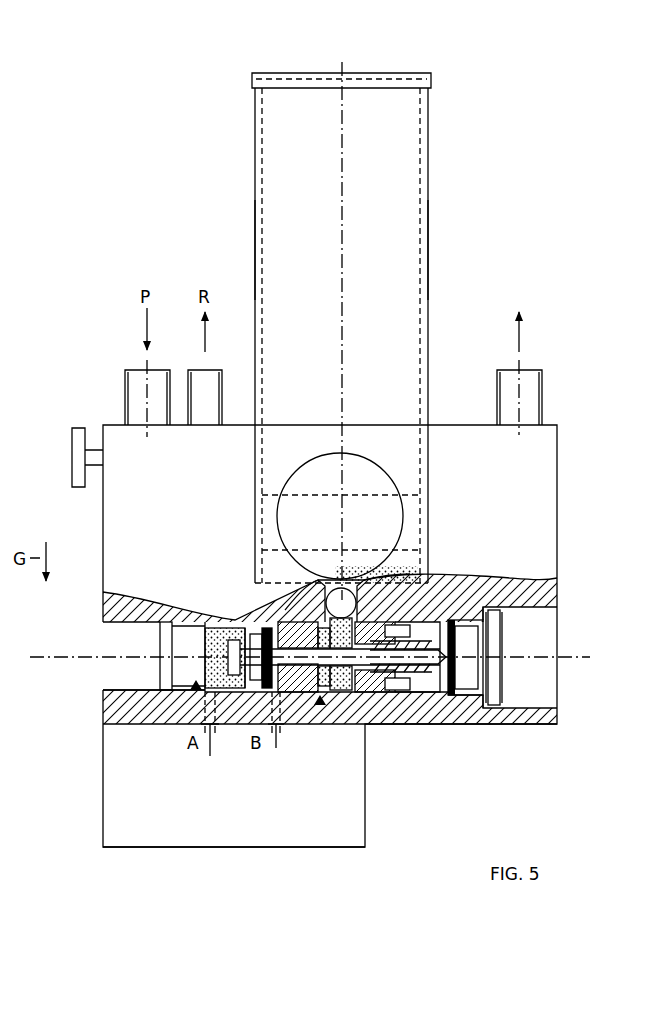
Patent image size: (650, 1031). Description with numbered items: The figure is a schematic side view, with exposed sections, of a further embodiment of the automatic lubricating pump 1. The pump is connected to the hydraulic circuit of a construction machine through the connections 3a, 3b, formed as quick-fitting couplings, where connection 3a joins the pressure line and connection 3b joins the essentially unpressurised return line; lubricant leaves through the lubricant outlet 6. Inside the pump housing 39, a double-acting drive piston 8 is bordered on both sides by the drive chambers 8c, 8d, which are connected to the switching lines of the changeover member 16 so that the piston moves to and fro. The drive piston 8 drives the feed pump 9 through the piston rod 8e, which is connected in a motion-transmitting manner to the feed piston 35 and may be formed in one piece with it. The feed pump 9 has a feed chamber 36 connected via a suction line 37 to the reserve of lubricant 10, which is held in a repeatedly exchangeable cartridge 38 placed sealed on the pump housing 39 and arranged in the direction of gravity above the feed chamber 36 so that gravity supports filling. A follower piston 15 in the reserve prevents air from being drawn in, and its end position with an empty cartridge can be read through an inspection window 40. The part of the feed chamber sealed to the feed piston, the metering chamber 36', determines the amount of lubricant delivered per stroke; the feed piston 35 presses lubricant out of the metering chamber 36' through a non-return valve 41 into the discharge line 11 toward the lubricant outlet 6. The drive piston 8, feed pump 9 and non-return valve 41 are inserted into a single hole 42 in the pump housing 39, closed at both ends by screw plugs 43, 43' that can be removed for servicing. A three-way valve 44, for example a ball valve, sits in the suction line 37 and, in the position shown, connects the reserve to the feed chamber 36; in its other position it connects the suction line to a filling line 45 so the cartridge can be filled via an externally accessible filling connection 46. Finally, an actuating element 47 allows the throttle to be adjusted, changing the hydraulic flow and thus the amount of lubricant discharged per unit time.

The automatic lubricating pump 1 is at (94, 78).
The connection 3a is at (128, 360).
The connection 3b is at (196, 358).
The lubricant outlet 6 is at (548, 357).
The drive piston 8 is at (240, 622).
The drive chamber 8c is at (205, 614).
The drive chamber 8d is at (268, 622).
The piston rod 8e is at (300, 700).
The feed pump 9 is at (332, 700).
The reserve of lubricant 10 is at (428, 130).
The discharge line 11 is at (490, 608).
The follower piston 15 is at (368, 500).
The changeover member 16 is at (348, 840).
The feed piston 35 is at (388, 700).
The feed chamber 36 is at (373, 726).
The metering chamber 36' is at (397, 702).
The suction line 37 is at (328, 578).
The cartridge 38 is at (428, 253).
The pump housing 39 is at (557, 450).
The inspection window 40 is at (277, 478).
The non-return valve 41 is at (445, 665).
The hole 42 is at (180, 692).
The screw plug 43 is at (131, 656).
The screw plug 43' is at (546, 657).
The three-way valve 44 is at (395, 548).
The filling line 45 is at (398, 582).
The filling connection 46 is at (387, 577).
The actuating element 47 is at (69, 457).